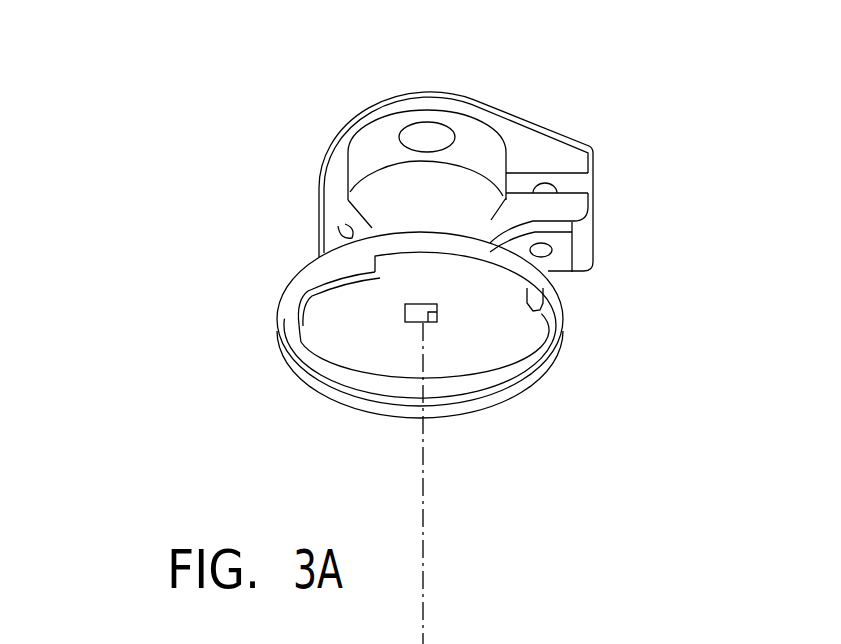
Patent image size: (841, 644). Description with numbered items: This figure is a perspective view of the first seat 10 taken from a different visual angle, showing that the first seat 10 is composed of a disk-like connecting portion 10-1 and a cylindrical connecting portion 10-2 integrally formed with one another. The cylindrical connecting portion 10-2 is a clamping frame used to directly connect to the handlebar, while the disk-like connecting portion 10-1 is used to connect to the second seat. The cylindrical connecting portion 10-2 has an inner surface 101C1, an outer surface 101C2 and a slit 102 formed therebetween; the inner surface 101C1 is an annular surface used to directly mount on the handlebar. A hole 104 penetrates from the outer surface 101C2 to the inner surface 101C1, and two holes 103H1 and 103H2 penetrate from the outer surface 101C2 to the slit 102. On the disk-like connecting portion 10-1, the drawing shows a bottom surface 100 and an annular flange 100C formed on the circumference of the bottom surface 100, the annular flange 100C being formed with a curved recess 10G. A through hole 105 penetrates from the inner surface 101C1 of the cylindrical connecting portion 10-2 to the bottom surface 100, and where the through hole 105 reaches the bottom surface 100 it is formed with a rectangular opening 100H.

The first seat 10 is at (148, 312).
The disk-like connecting portion 10-1 is at (293, 289).
The cylindrical connecting portion 10-2 is at (318, 191).
The bottom surface 100 is at (385, 335).
The annular flange 100C is at (350, 408).
The rectangular opening 100H is at (433, 320).
The through hole 105 is at (436, 313).
The curved recess 10G is at (550, 285).
The inner surface 101C1 is at (387, 133).
The outer surface 101C2 is at (430, 93).
The slit 102 is at (578, 190).
The hole 103H1 is at (547, 183).
The hole 103H2 is at (550, 251).
The hole 104 is at (432, 122).